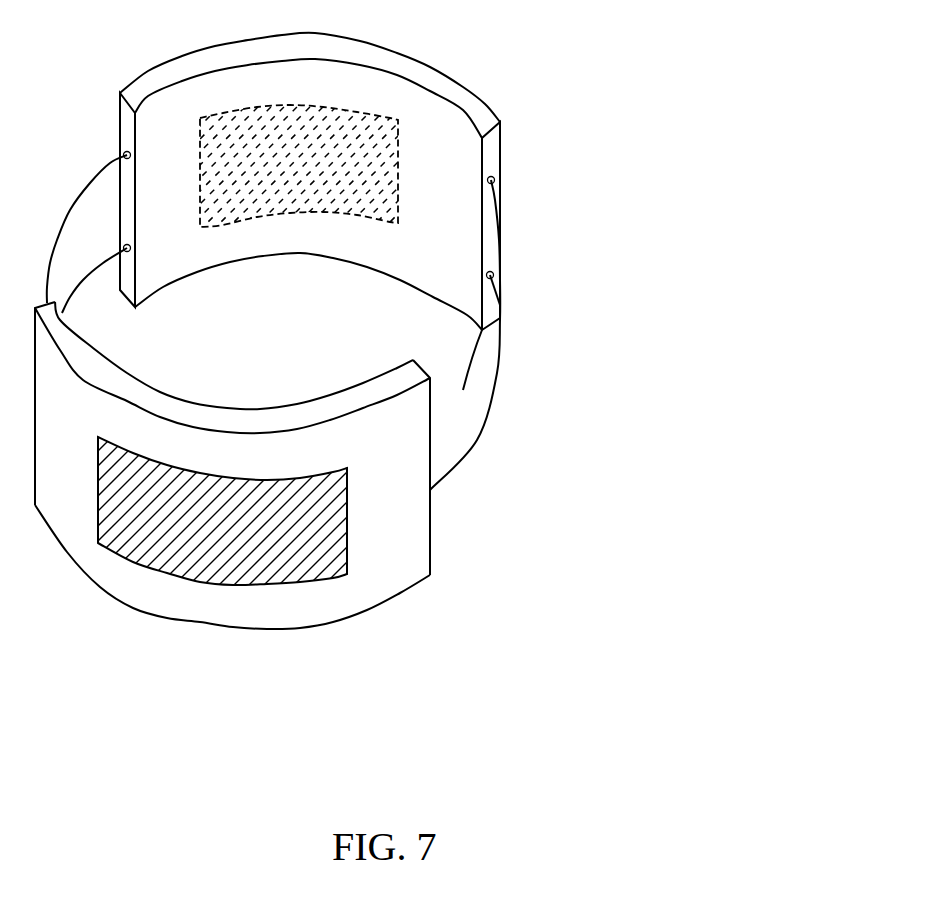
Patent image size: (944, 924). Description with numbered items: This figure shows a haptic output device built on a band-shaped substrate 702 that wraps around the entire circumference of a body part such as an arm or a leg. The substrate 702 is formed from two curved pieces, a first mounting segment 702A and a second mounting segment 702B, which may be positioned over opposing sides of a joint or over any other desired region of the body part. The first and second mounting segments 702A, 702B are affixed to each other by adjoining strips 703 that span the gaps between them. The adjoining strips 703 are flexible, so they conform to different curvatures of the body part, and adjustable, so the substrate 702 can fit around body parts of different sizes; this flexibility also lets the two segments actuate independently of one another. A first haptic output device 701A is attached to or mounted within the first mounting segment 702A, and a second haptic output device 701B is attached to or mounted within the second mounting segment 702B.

The first haptic output device 701A is at (318, 572).
The second haptic output device 701B is at (392, 123).
The substrate 702 is at (412, 331).
The first mounting segment 702A is at (418, 450).
The second mounting segment 702B is at (463, 233).
The adjoining strips 703 is at (463, 390).